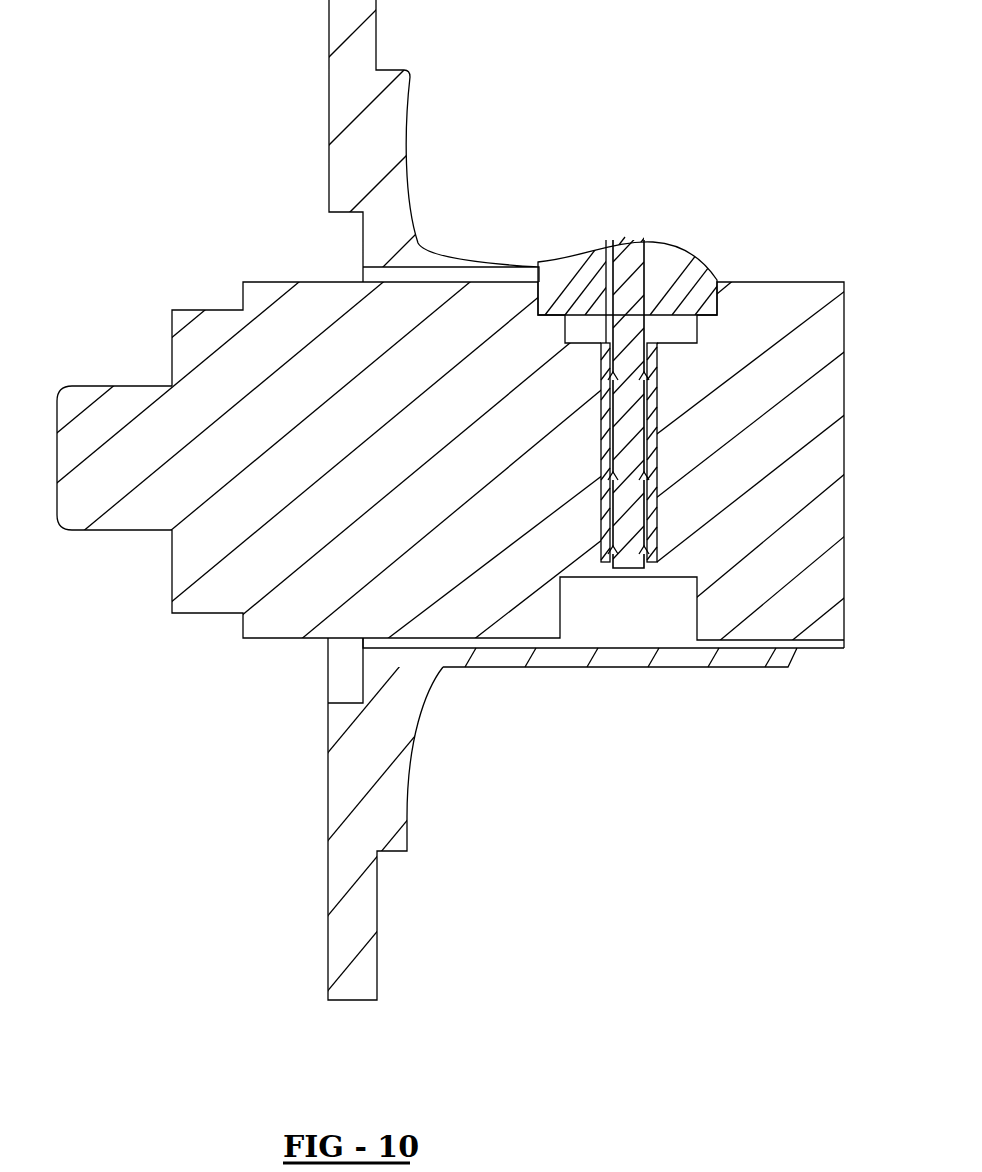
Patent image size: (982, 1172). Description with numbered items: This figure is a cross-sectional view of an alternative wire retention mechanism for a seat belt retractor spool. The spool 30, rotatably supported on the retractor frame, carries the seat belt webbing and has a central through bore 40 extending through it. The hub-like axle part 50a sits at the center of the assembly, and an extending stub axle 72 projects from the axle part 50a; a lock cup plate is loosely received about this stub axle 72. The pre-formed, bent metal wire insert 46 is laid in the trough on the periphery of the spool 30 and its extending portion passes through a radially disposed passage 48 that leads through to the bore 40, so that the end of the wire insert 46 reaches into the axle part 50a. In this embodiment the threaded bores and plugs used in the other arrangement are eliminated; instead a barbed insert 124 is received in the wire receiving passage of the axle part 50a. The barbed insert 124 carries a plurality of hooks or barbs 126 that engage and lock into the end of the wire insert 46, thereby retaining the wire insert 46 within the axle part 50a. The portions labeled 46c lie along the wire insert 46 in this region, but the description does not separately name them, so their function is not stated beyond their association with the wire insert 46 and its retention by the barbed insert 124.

The spool 30 is at (382, 128).
The central through bore 40 is at (636, 650).
The wire insert 46 is at (622, 495).
The bolt engagement portion 46c is at (634, 300).
The radial passage 48 is at (640, 261).
The axle part 50a is at (253, 572).
The stub axle 72 is at (123, 408).
The barbed insert 124 is at (648, 551).
The hooks or barbs 126 is at (610, 477).